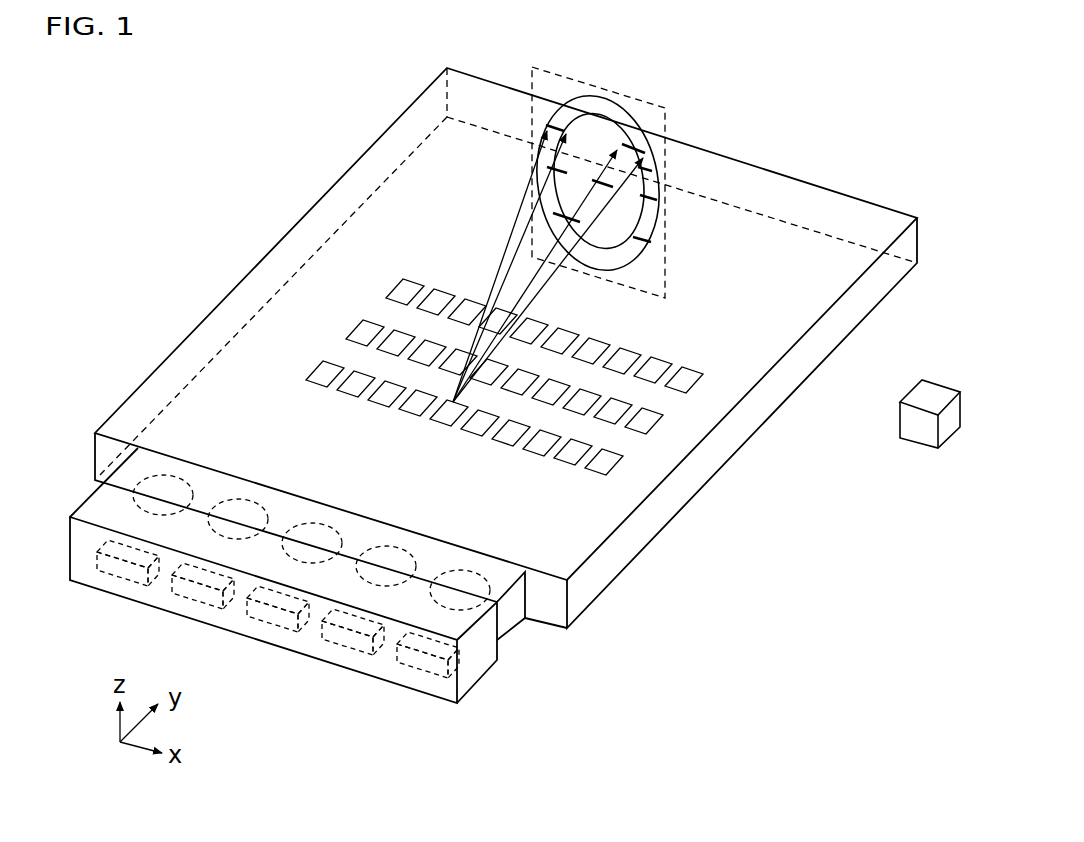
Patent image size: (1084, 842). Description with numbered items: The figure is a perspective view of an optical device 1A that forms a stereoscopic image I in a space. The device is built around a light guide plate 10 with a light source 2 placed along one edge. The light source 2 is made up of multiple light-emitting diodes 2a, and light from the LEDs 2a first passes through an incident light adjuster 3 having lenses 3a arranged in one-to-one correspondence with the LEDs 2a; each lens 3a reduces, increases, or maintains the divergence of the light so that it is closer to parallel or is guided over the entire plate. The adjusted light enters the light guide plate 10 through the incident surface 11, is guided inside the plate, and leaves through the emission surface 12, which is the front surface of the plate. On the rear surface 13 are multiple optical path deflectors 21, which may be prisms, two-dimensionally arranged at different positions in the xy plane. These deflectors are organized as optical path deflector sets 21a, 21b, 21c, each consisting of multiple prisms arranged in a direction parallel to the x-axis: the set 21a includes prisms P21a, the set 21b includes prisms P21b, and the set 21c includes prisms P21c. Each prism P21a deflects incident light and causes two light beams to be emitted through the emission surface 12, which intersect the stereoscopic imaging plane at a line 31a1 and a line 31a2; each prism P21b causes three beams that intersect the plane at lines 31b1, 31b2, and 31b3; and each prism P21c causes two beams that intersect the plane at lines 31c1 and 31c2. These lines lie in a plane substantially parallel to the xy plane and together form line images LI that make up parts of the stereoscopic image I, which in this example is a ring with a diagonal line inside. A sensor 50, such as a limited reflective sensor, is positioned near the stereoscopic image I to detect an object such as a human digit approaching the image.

The optical device 1A is at (200, 170).
The light source 2 is at (283, 631).
The light-emitting diodes (LEDs) 2a is at (122, 573).
The incident light adjuster 3 is at (301, 518).
The lenses 3a is at (166, 478).
The light guide plate 10 is at (506, 348).
The incident surface 11 is at (550, 600).
The emission surface 12 is at (797, 300).
The rear surface 13 is at (815, 377).
The optical path deflectors 21 is at (494, 372).
The optical path deflector set 21a is at (447, 410).
The optical path deflector set 21b is at (487, 368).
The optical path deflector set 21c is at (525, 324).
The prisms P21a is at (349, 377).
The prisms P21b is at (389, 336).
The prisms P21c is at (437, 294).
The line 31a1 is at (552, 125).
The line 31a2 is at (642, 133).
The line 31b1 is at (549, 170).
The line 31b2 is at (592, 184).
The line 31b3 is at (652, 190).
The line 31c1 is at (553, 215).
The line 31c2 is at (650, 230).
The sensor 50 is at (917, 447).
The stereoscopic image I is at (634, 112).
The line images LI is at (360, 63).